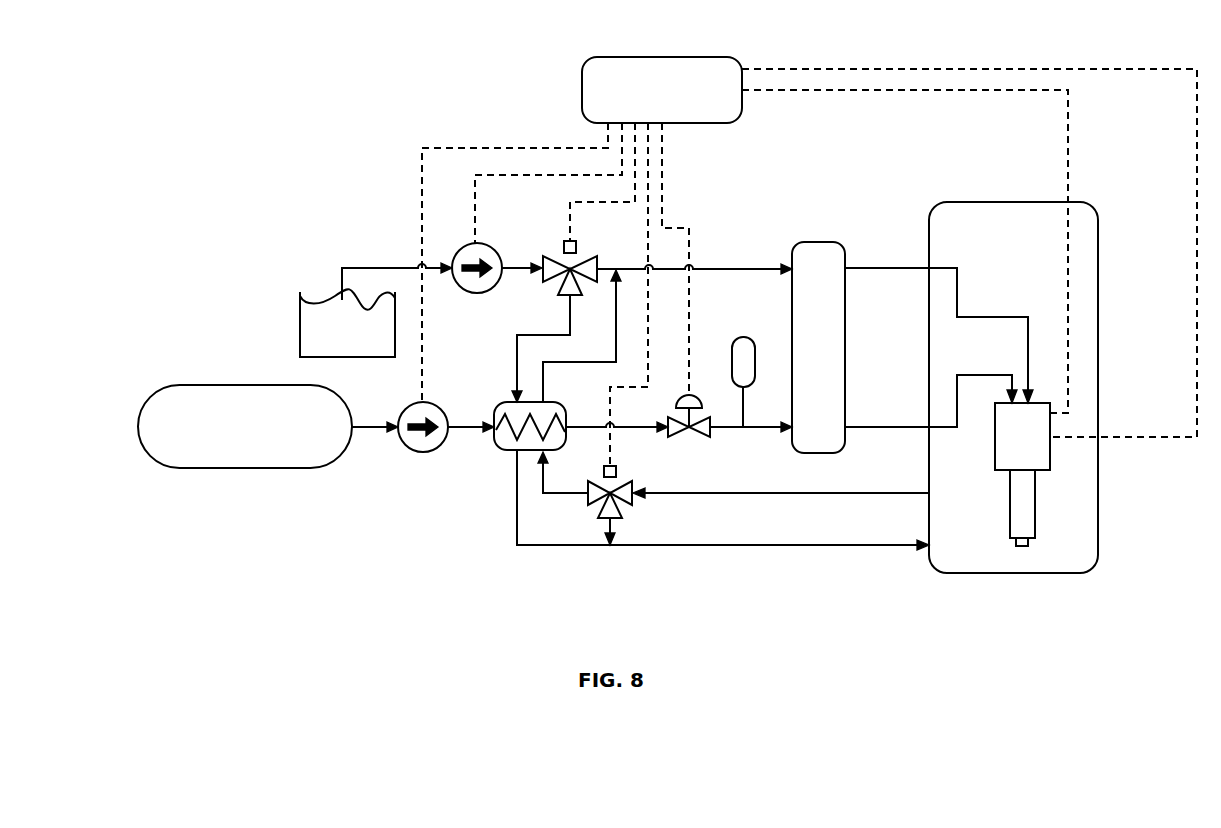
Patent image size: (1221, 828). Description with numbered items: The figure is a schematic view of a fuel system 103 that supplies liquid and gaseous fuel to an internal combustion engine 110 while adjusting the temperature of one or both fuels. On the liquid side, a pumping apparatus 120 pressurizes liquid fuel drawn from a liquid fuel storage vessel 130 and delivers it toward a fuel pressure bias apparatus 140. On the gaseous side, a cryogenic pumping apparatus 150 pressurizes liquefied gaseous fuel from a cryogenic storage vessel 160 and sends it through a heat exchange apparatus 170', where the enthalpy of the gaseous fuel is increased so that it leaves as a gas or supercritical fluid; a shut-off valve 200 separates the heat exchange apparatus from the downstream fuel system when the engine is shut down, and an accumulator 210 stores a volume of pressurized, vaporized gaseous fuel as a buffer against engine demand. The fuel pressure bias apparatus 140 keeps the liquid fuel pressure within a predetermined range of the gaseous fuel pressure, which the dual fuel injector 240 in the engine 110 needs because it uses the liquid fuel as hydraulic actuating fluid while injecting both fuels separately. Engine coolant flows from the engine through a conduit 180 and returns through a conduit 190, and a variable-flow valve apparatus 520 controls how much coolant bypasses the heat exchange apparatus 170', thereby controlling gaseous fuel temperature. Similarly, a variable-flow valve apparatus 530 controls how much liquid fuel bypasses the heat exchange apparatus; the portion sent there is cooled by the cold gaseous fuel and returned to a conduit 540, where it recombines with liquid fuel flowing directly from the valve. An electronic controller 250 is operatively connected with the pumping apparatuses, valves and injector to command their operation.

The fuel system 103 is at (278, 158).
The internal combustion engine 110 is at (1098, 490).
The pumping apparatus 120 is at (477, 294).
The liquid fuel storage vessel 130 is at (367, 336).
The fuel pressure bias apparatus 140 is at (802, 357).
The pumping apparatus 150 is at (423, 452).
The cryogenic storage vessel 160 is at (265, 438).
The heat exchange apparatus 170' is at (504, 411).
The conduit 180 is at (808, 495).
The conduit 190 is at (843, 546).
The shut-off valve 200 is at (700, 430).
The accumulator 210 is at (745, 337).
The dual fuel injector 240 is at (1022, 474).
The electronic controller 250 is at (643, 98).
The variable-flow valve apparatus 520 is at (598, 505).
The variable-flow valve apparatus 530 is at (586, 260).
The conduit 540 is at (713, 268).